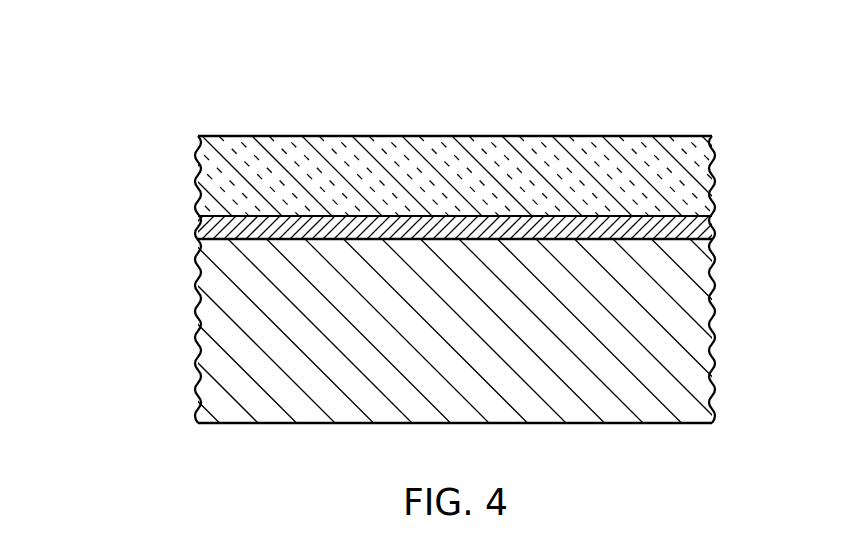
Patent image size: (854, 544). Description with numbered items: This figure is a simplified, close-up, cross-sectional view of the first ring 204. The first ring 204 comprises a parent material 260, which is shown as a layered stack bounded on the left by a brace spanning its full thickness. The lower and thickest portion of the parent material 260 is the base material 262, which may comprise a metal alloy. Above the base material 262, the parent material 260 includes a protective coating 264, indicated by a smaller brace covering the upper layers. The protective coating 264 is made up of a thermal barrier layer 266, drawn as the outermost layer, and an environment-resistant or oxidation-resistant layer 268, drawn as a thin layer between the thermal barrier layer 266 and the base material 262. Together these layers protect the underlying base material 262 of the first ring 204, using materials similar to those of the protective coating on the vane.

The first ring 204 is at (559, 113).
The parent material 260 is at (108, 137).
The base material 262 is at (710, 322).
The protective coating 264 is at (185, 137).
The thermal barrier layer 266 is at (711, 183).
The environment-resistant or oxidation-resistant layer 268 is at (711, 232).